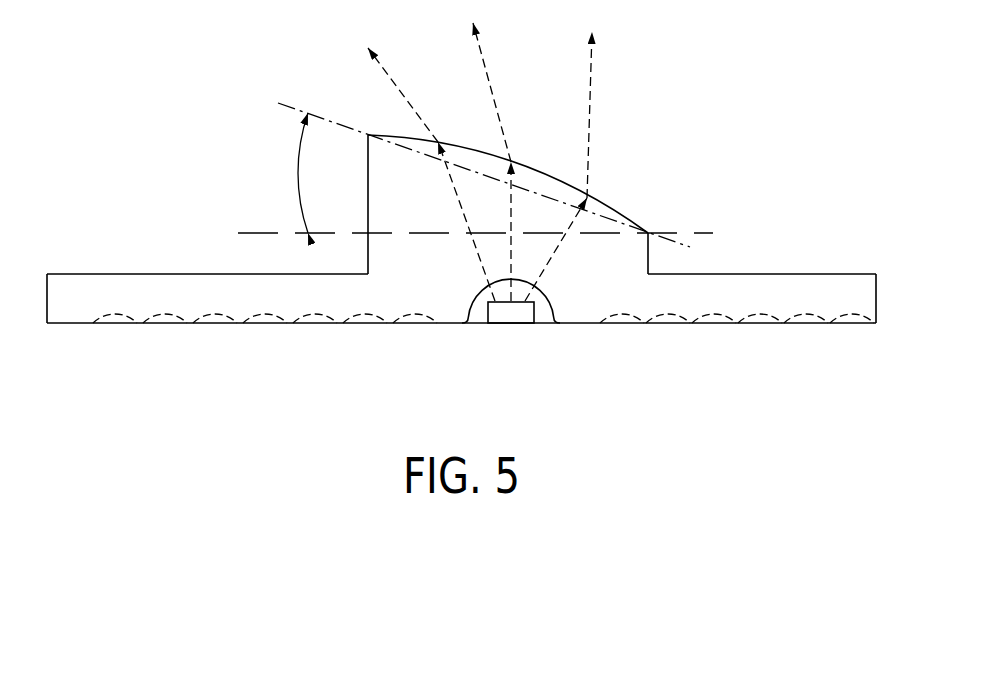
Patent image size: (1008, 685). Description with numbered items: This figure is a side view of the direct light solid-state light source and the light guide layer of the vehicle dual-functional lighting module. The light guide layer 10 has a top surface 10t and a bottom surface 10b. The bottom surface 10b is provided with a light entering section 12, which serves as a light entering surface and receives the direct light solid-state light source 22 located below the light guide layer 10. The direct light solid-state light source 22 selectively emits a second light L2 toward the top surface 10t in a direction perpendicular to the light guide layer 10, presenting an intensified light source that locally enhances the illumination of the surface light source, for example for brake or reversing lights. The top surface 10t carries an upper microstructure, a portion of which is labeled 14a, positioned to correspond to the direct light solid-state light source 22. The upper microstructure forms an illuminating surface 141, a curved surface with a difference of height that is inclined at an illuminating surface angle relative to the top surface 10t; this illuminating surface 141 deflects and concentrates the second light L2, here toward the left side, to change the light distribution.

The light guide layer 10 is at (828, 274).
The top surface 10t is at (113, 274).
The bottom surface 10b is at (850, 325).
The light entering section 12 is at (474, 297).
The direct light solid-state light source 22 is at (510, 310).
The side wall of lens 14a is at (368, 257).
The illuminating surface 141 is at (618, 213).
The second light L2 is at (590, 88).